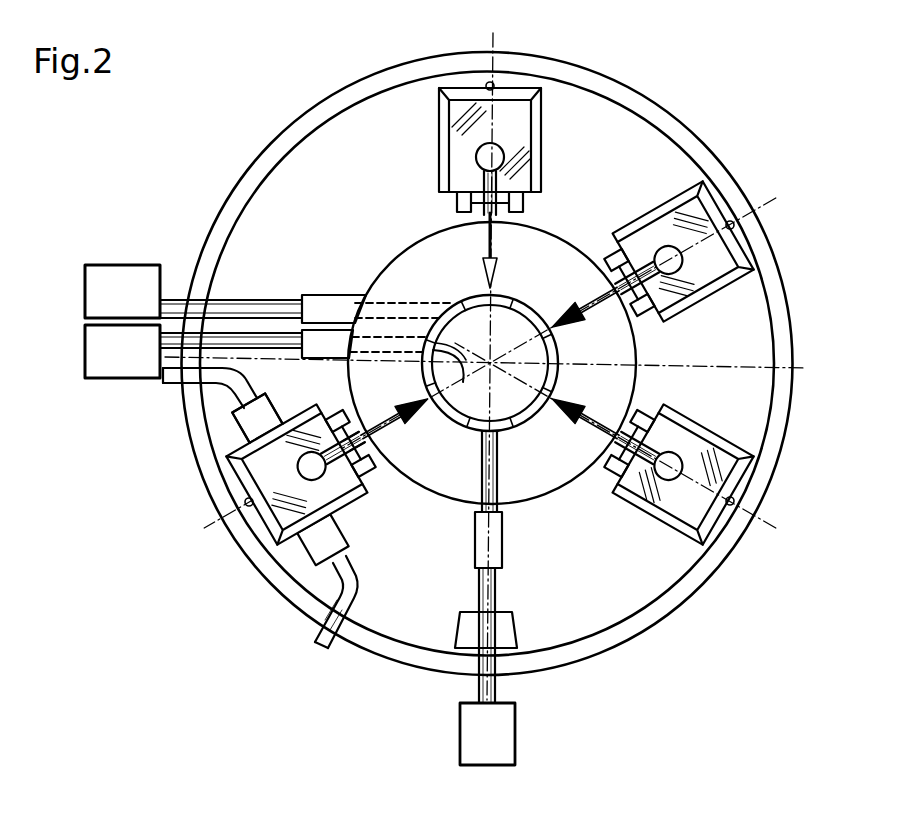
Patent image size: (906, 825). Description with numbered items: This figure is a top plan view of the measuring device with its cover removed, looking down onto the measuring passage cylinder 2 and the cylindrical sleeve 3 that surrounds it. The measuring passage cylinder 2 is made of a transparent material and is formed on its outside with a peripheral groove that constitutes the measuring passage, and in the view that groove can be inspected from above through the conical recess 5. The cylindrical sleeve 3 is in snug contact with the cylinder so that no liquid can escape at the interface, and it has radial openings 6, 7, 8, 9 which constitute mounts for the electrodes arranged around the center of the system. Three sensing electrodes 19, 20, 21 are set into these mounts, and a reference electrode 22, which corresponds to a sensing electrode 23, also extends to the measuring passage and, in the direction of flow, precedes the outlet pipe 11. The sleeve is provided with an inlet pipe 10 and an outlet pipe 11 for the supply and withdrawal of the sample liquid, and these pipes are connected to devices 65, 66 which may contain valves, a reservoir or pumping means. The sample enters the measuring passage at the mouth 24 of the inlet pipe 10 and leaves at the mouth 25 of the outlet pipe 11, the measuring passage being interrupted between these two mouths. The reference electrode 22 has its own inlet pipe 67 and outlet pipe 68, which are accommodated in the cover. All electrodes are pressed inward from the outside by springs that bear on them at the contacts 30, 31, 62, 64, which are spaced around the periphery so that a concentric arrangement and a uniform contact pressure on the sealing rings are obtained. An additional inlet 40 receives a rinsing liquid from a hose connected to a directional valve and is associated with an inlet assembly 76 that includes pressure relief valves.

The measuring passage cylinder 2 is at (497, 432).
The cylindrical sleeve 3 is at (397, 253).
The recess 5 is at (547, 378).
The radial opening 6 is at (496, 238).
The radial opening 7 is at (594, 298).
The radial opening 8 is at (590, 432).
The radial opening 9 is at (381, 424).
The inlet pipe 10 is at (175, 298).
The outlet pipe 11 is at (171, 386).
The sensing electrode 19 is at (522, 133).
The sensing electrode 20 is at (645, 233).
The sensing electrode 21 is at (698, 458).
The reference electrode 22 is at (337, 492).
The sensing electrode 23 is at (362, 428).
The mouth of the inlet pipe 24 is at (463, 347).
The mouth of the outlet pipe 25 is at (462, 376).
The contact 30 is at (493, 84).
The contact 31 is at (247, 500).
The additional inlet 40 is at (497, 606).
The contact 62 is at (727, 510).
The contact 64 is at (735, 218).
The device 65 is at (118, 278).
The device 66 is at (117, 352).
The inlet pipe 67 is at (228, 395).
The outlet pipe 68 is at (326, 586).
The inlet assembly 76 is at (462, 645).